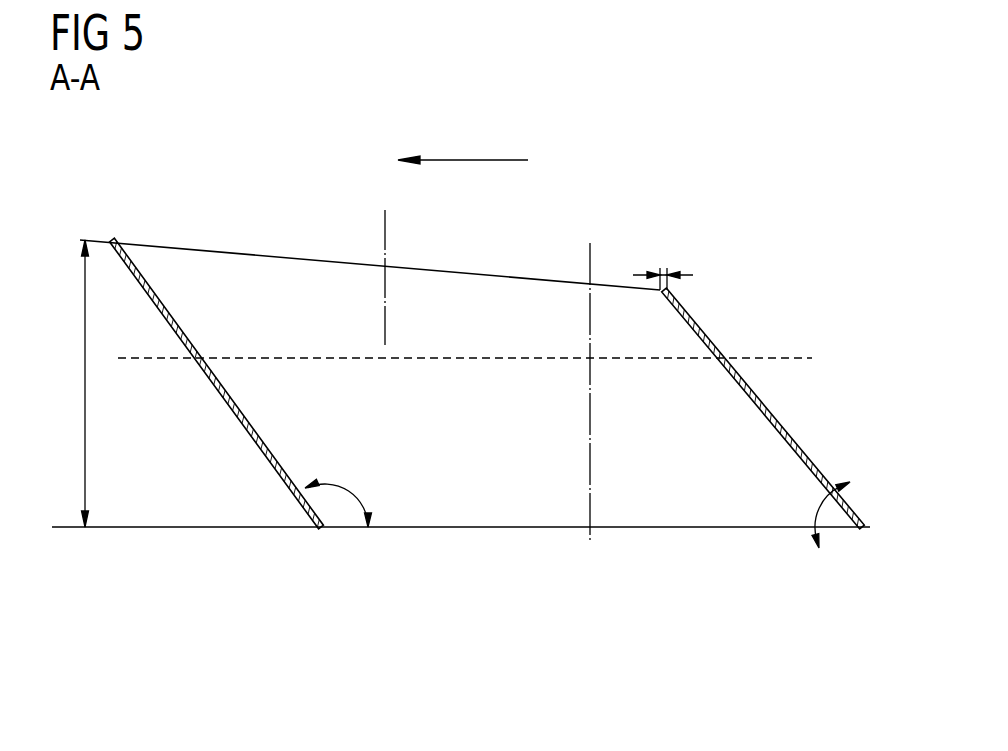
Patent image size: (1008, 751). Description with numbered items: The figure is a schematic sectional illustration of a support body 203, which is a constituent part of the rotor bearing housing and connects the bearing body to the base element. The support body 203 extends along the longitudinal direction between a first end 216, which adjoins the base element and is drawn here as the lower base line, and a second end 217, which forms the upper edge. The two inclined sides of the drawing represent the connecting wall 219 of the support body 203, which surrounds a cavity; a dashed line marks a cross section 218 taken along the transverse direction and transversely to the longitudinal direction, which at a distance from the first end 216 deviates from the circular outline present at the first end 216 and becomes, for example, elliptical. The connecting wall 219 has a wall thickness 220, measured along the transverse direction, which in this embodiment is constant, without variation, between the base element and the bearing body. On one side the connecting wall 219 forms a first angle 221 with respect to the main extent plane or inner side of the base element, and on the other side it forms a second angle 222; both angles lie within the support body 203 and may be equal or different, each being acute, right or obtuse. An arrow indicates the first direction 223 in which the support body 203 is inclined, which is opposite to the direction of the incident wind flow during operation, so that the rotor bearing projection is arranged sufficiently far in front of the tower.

The support body 203 is at (654, 113).
The first end 216 is at (318, 530).
The second end 217 is at (111, 238).
The cross section 218 is at (790, 357).
The connecting wall 219 is at (250, 442).
The wall thickness 220 is at (663, 270).
The first angle 221 is at (357, 486).
The second angle 222 is at (818, 503).
The first direction 223 is at (473, 158).